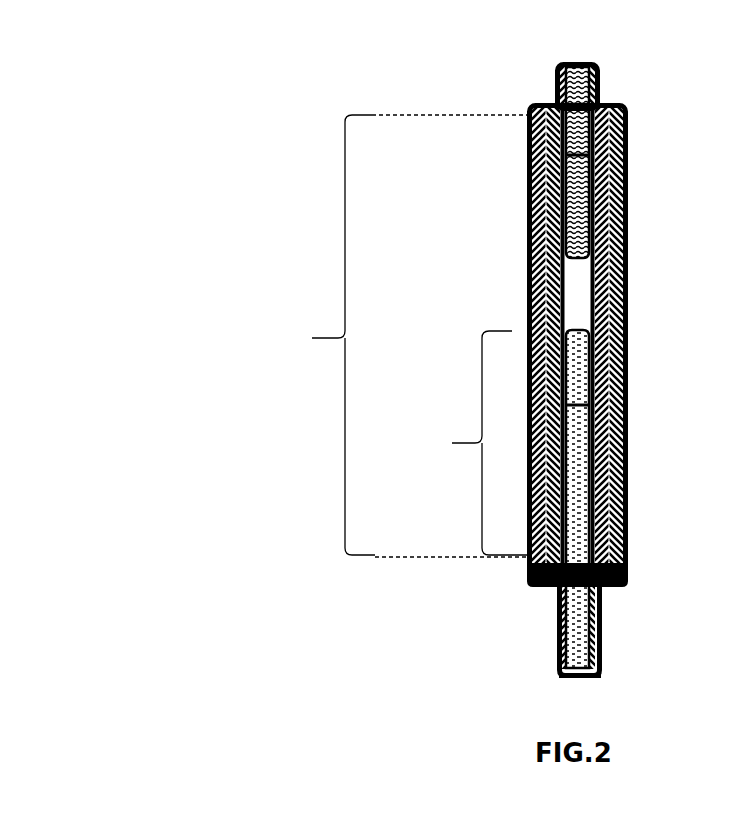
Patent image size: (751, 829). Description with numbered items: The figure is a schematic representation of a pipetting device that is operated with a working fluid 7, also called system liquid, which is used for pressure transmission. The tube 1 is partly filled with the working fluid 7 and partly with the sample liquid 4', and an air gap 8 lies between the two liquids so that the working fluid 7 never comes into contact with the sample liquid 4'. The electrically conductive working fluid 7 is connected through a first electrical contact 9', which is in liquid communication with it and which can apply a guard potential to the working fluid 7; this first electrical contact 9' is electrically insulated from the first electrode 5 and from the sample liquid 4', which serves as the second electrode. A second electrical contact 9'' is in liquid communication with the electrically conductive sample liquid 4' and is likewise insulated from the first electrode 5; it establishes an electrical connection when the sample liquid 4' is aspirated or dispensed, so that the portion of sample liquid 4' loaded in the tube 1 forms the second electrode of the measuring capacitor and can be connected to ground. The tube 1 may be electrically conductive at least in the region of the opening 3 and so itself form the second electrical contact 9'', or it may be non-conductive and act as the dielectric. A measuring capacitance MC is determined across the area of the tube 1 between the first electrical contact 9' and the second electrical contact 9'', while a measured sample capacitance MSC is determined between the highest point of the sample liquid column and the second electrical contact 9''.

The tube 1 is at (610, 185).
The opening 3 is at (578, 678).
The sample liquid 4' is at (641, 499).
The first electrode 5 is at (529, 262).
The working fluid 7 is at (612, 150).
The air gap 8 is at (568, 298).
The first electrical contact 9' is at (636, 158).
The second electrical contact 9'' is at (642, 628).
The measuring capacitance MC is at (389, 336).
The measured sample capacitance MSC is at (452, 443).